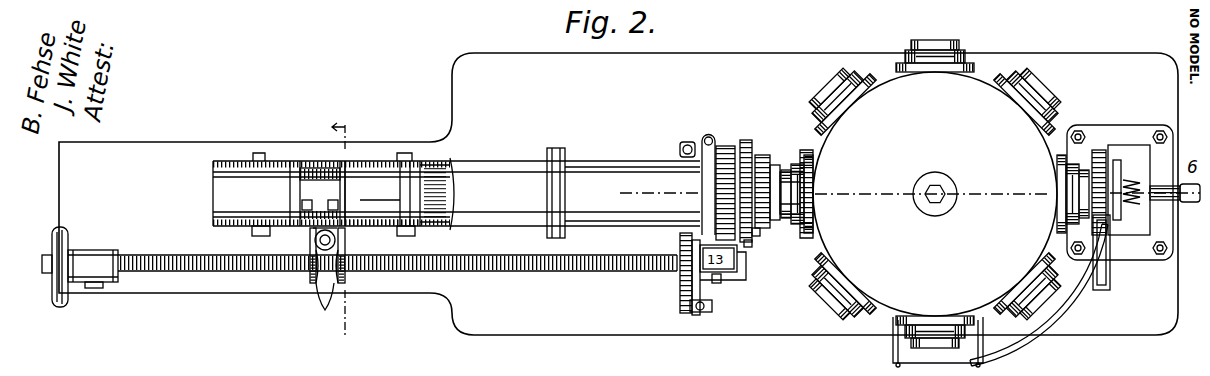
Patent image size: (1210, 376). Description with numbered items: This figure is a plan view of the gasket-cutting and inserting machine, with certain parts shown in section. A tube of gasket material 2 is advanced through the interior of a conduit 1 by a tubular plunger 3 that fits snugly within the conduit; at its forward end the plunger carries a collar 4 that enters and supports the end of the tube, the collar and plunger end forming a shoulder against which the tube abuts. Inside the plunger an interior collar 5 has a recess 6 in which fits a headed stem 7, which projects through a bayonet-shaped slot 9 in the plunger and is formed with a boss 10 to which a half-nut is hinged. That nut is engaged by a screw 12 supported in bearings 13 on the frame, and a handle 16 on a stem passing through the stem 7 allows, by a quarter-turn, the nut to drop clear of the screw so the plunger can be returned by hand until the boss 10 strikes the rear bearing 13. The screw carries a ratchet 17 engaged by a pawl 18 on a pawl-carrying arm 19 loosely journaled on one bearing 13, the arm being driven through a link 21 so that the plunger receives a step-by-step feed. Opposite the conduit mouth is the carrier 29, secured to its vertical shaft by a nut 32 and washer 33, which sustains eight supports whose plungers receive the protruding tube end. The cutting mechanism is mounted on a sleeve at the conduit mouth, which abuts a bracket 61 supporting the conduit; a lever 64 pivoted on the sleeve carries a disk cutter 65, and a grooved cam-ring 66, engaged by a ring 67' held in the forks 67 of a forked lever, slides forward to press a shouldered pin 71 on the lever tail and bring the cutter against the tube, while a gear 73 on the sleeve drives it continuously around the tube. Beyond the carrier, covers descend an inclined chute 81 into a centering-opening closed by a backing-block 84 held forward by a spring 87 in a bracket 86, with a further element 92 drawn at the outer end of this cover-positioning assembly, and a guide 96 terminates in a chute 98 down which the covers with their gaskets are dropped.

The conduit 1 is at (456, 194).
The tube of gasket material 2 is at (432, 218).
The plunger 3 is at (366, 222).
The collar 4 is at (396, 225).
The interior collar 5 is at (335, 166).
The recess 6 is at (623, 193).
The headed stem 7 is at (318, 223).
The bayonet-shaped slot 9 is at (349, 228).
The boss 10 is at (346, 276).
The screw 12 is at (573, 270).
The bearings 13 is at (93, 269).
The handle 16 is at (325, 296).
The ratchet 17 is at (681, 281).
The pawl 18 is at (684, 294).
The pawl-carrying arm 19 is at (708, 283).
The link 21 is at (706, 305).
The carrier 29 is at (935, 194).
The nut 32 is at (930, 203).
The washer 33 is at (943, 206).
The bracket 61 is at (710, 140).
The lever 64 is at (765, 158).
The disk cutter 65 is at (777, 165).
The cam-ring 66 is at (755, 236).
The forks 67 is at (742, 179).
The ring 67' is at (762, 254).
The shouldered pin 71 is at (778, 222).
The gear 73 is at (737, 152).
The chute 81 is at (1100, 165).
The backing-block 84 is at (1125, 226).
The bracket 86 is at (1152, 212).
The spring 87 is at (1138, 186).
The knob 92 is at (1188, 201).
The guide 96 is at (1066, 308).
The chute 98 is at (942, 352).